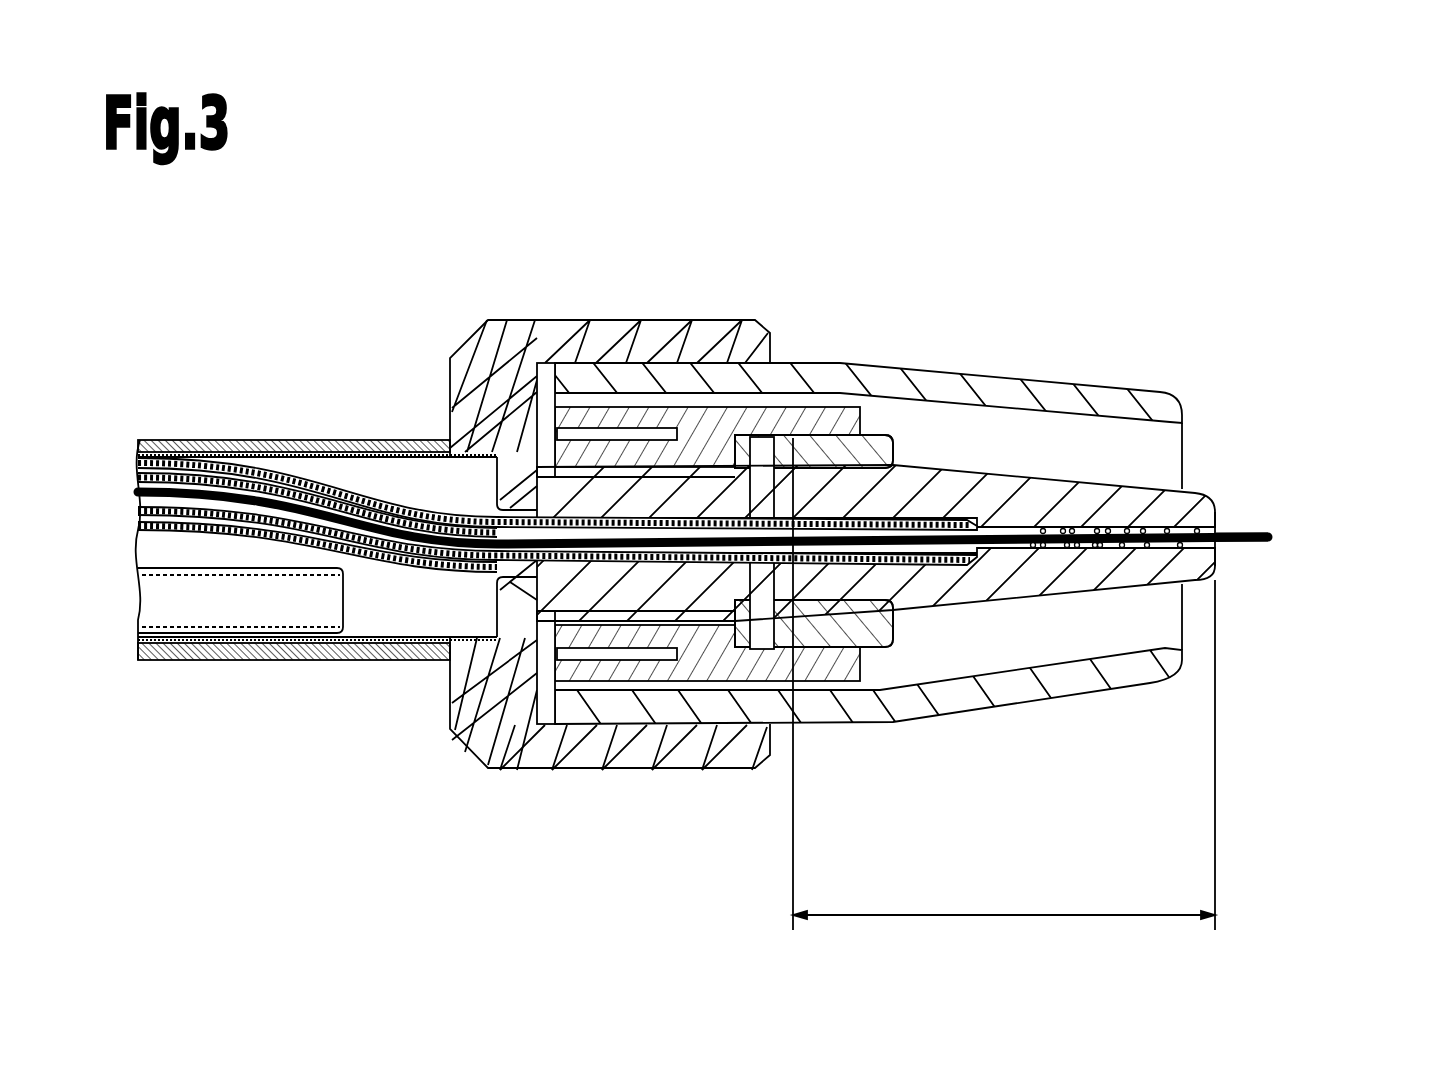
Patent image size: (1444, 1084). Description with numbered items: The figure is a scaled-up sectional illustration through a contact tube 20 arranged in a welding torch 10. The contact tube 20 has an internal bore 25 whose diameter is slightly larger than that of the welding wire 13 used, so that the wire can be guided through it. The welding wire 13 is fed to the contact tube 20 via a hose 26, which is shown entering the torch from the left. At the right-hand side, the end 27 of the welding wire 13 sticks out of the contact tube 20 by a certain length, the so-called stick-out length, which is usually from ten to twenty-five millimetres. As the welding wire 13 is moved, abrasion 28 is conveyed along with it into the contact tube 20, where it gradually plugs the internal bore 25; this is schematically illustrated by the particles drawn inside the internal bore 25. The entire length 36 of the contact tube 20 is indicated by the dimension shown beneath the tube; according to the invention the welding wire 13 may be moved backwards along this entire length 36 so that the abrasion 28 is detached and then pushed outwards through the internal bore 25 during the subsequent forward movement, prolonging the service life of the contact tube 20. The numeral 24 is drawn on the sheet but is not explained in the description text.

The welding torch 10 is at (1045, 220).
The housing cap 24 is at (880, 378).
The contact tube 20 is at (1130, 503).
The hose 26 is at (390, 500).
The welding wire 13 is at (1228, 552).
The internal bore 25 is at (1018, 533).
The abrasion 28 is at (1213, 514).
The end of the welding wire 27 is at (1283, 524).
The entire length of the contact tube 36 is at (1004, 684).